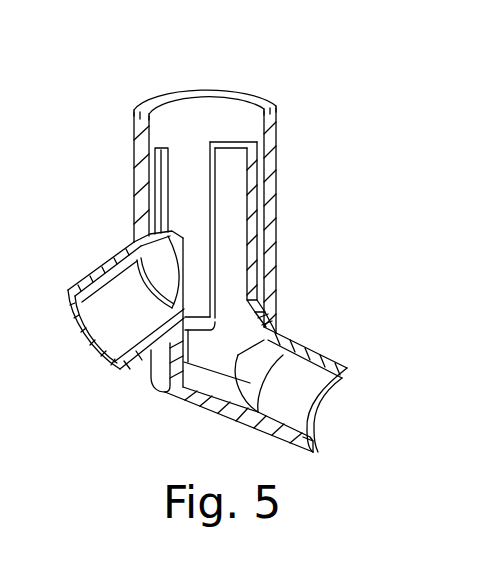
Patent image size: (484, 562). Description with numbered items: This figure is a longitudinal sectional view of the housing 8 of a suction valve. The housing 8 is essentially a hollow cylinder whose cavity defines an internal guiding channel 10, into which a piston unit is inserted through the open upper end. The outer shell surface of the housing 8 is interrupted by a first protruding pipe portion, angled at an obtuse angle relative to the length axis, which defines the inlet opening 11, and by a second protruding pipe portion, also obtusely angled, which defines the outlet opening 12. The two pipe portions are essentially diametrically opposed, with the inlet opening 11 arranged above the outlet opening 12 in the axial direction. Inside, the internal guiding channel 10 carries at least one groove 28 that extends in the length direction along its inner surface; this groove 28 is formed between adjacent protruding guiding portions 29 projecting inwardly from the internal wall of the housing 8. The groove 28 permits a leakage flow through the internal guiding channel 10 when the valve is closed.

The housing 8 is at (320, 189).
The internal guiding channel 10 is at (215, 115).
The inlet opening 11 is at (106, 335).
The outlet opening 12 is at (318, 403).
The groove 28 is at (178, 177).
The protruding guiding portions 29 is at (151, 207).